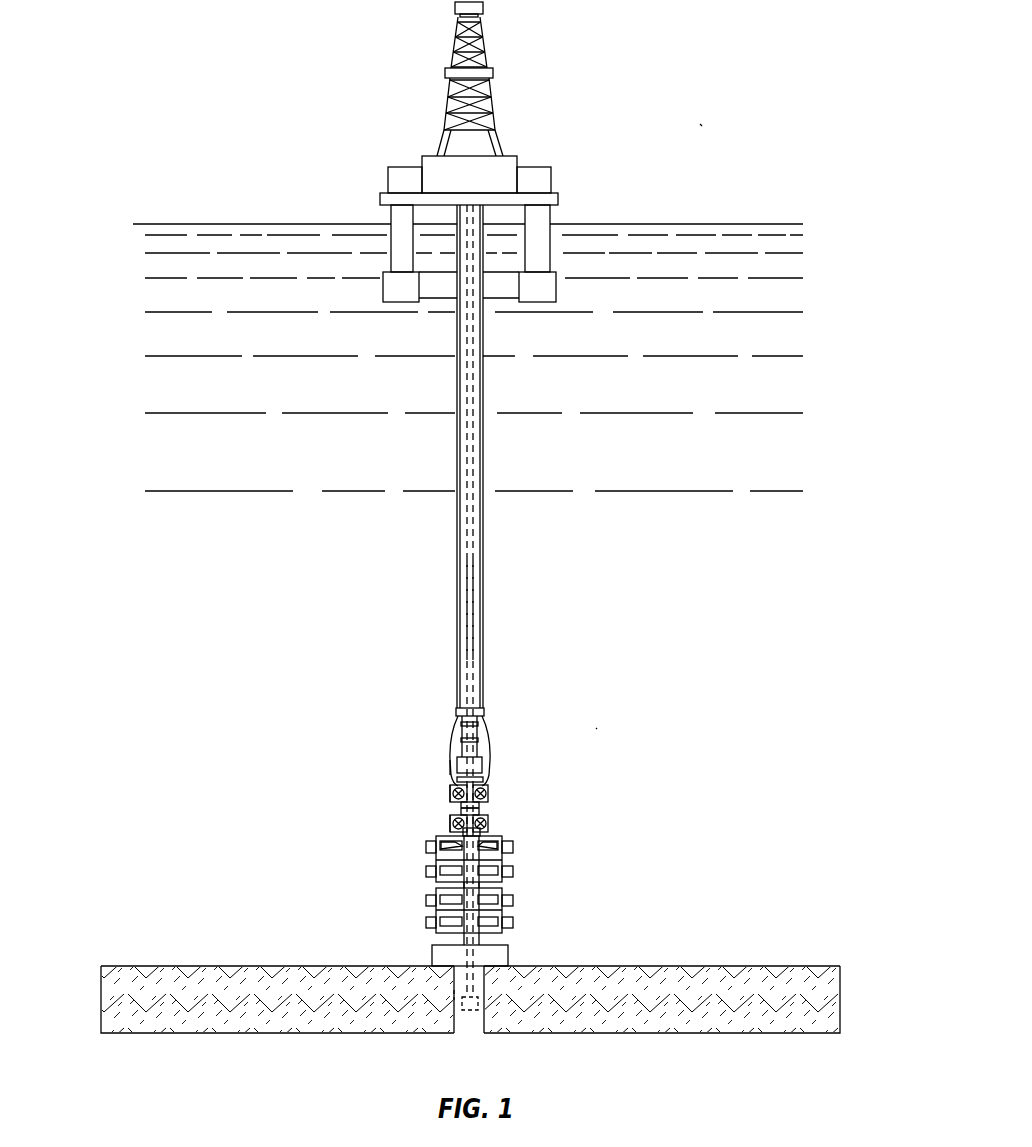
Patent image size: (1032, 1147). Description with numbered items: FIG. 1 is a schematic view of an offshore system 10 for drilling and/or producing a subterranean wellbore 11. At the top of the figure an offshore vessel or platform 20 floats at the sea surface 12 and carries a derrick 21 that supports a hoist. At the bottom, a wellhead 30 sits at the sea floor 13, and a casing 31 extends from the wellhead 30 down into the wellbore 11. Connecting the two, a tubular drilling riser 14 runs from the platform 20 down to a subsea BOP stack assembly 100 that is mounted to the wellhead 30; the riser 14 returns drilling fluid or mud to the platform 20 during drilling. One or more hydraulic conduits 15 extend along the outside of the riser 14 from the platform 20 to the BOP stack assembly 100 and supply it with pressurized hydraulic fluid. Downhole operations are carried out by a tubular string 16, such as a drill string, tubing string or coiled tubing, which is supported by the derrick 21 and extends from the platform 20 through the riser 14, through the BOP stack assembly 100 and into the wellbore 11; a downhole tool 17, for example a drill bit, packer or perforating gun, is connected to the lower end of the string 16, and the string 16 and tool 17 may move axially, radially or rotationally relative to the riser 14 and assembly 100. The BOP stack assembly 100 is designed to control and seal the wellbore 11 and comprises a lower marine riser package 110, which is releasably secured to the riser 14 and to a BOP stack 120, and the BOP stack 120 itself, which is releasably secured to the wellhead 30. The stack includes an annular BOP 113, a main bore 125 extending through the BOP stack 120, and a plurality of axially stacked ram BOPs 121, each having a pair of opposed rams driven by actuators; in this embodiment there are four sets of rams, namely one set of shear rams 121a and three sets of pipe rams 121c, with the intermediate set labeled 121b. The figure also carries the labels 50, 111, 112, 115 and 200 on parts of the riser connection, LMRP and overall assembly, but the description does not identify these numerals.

The offshore system 10 is at (701, 124).
The wellbore 11 is at (452, 996).
The sea surface 12 is at (727, 221).
The sea floor 13 is at (762, 966).
The tubular drilling riser 14 is at (479, 457).
The hydraulic conduits 15 is at (484, 398).
The tubular string 16 is at (484, 612).
The downhole tool 17 is at (466, 1012).
The offshore vessel or platform 20 is at (516, 156).
The derrick 21 is at (484, 56).
The wellhead 30 is at (511, 955).
The casing 31 is at (480, 1027).
The connector 50 is at (488, 806).
The BOP stack assembly 100 is at (311, 838).
The lower marine riser package 110 is at (501, 783).
The annular blowout preventer 111 is at (484, 762).
The flex joint 112 is at (484, 736).
The annular BOP 113 is at (448, 790).
The accumulator 115 is at (454, 760).
The BOP stack 120 is at (381, 888).
The ram BOPs 121 is at (469, 884).
The shear rams 121a is at (520, 846).
The ram blowout preventer 121b is at (520, 870).
The pipe rams 121c is at (520, 898).
The main bore 125 is at (460, 851).
The BOP system 200 is at (596, 728).